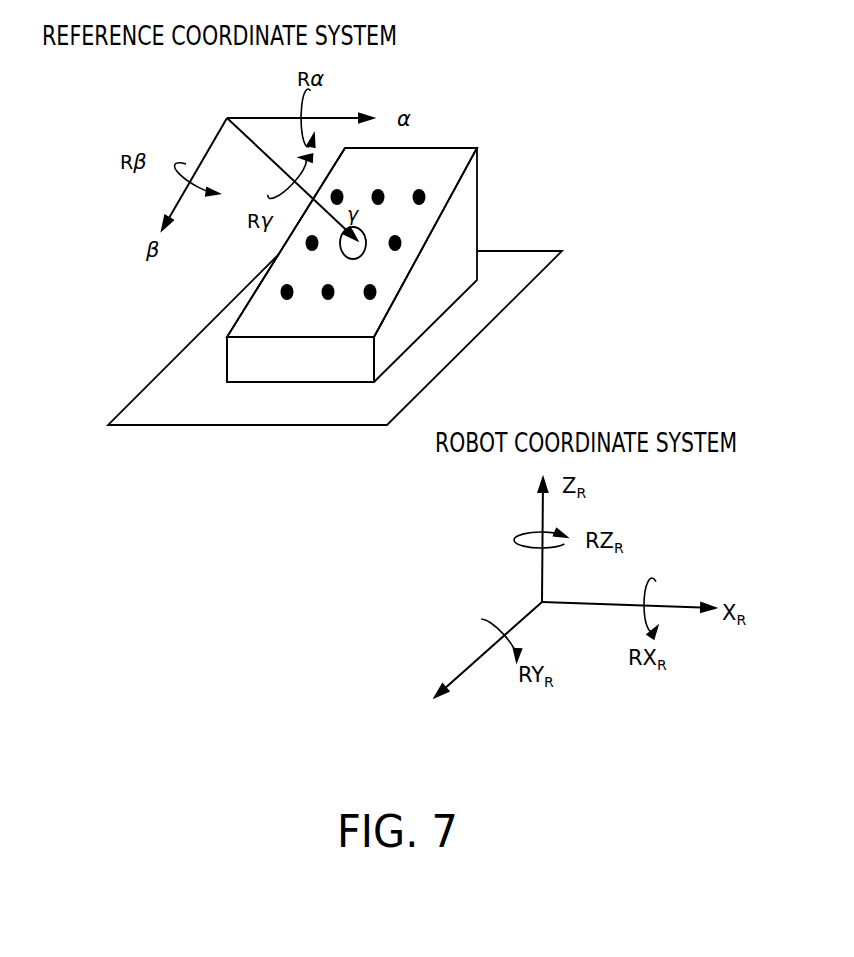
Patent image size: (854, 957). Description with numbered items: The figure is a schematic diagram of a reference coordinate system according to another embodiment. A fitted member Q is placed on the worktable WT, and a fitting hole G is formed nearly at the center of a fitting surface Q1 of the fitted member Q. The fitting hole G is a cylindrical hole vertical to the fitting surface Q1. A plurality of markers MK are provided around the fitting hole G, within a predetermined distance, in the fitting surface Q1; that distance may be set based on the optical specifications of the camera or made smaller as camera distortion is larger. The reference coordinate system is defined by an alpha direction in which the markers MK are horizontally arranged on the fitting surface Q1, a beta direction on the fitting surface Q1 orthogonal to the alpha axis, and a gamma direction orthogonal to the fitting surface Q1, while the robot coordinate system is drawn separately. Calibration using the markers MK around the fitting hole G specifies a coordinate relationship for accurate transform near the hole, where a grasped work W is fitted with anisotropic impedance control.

The worktable WT is at (332, 365).
The fitted member Q is at (399, 259).
The fitting surface Q1 is at (383, 215).
The workpiece W is at (367, 327).
The markers MK is at (431, 244).
The fitting hole G is at (457, 288).